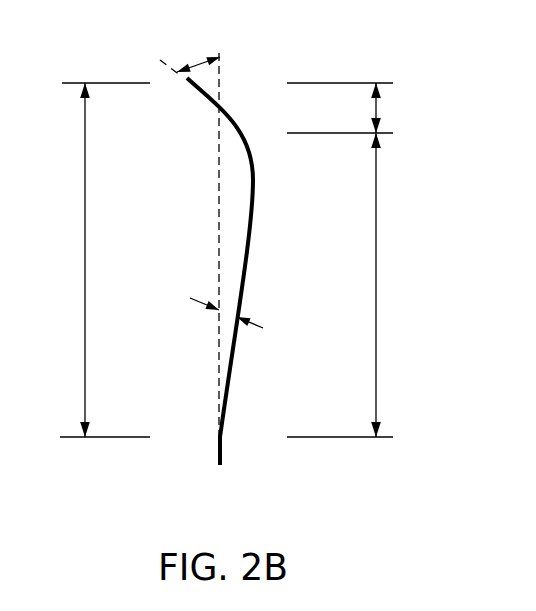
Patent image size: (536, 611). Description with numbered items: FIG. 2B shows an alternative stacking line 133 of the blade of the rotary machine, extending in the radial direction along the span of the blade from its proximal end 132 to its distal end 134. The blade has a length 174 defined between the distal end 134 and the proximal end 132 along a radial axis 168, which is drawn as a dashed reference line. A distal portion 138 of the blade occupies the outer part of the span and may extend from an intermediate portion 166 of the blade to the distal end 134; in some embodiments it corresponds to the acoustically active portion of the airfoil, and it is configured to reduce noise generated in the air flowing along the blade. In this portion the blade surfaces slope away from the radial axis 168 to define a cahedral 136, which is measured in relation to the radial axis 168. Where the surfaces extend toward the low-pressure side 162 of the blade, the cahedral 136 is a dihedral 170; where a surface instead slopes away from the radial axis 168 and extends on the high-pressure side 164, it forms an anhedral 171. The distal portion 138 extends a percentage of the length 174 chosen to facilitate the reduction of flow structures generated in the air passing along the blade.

The proximal end 132 is at (218, 442).
The blade 133 is at (233, 360).
The distal end 134 is at (177, 90).
The cahedral 136 is at (205, 78).
The distal portion 138 is at (377, 108).
The low-pressure side 162 is at (205, 218).
The high-pressure side 164 is at (280, 227).
The intermediate portion 166 is at (377, 277).
The radial axis 168 is at (218, 477).
The dihedral 170 is at (203, 62).
The anhedral 171 is at (237, 317).
The length 174 is at (85, 273).